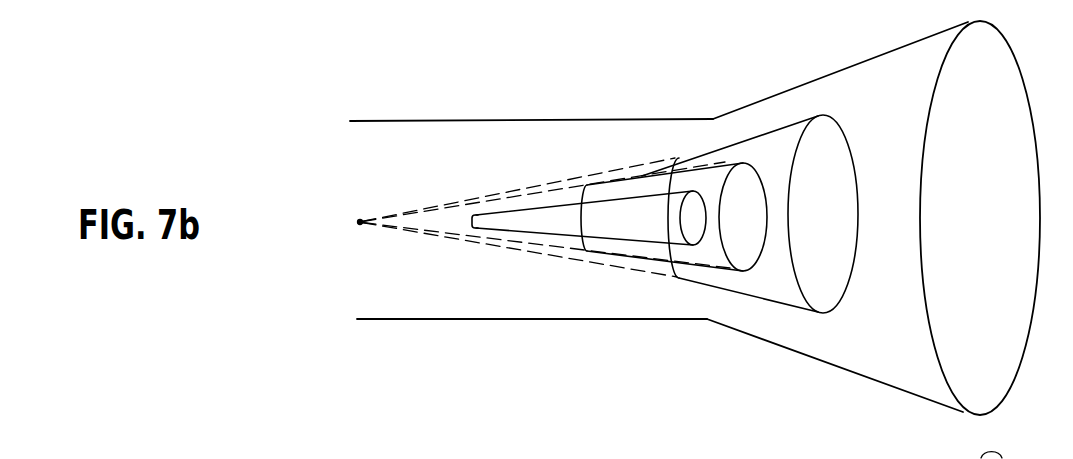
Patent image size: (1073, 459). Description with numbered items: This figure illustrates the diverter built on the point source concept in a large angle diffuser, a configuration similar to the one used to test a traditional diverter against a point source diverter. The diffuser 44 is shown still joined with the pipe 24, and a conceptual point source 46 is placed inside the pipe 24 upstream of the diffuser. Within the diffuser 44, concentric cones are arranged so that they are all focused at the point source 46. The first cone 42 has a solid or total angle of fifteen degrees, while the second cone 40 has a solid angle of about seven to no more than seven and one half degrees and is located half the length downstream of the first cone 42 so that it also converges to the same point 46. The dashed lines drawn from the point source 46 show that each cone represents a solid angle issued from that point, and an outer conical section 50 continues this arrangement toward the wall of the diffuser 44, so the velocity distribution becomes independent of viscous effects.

The pipe 24 is at (531, 250).
The second cone 40 is at (674, 198).
The first cone 42 is at (589, 185).
The diffuser 44 is at (873, 225).
The point source 46 is at (358, 222).
The outer conical section 50 is at (750, 185).